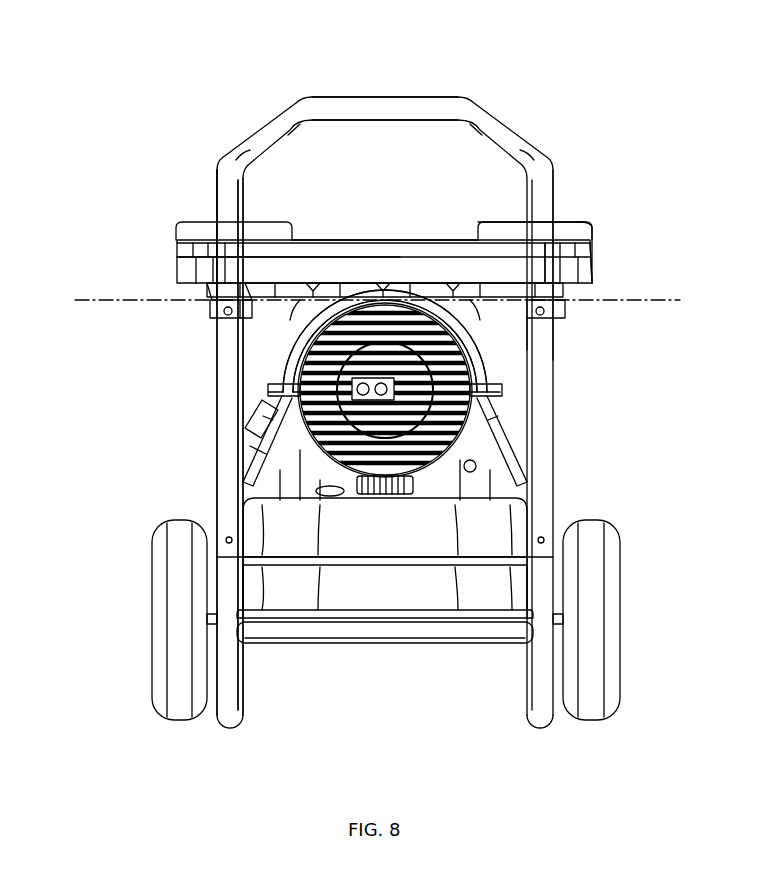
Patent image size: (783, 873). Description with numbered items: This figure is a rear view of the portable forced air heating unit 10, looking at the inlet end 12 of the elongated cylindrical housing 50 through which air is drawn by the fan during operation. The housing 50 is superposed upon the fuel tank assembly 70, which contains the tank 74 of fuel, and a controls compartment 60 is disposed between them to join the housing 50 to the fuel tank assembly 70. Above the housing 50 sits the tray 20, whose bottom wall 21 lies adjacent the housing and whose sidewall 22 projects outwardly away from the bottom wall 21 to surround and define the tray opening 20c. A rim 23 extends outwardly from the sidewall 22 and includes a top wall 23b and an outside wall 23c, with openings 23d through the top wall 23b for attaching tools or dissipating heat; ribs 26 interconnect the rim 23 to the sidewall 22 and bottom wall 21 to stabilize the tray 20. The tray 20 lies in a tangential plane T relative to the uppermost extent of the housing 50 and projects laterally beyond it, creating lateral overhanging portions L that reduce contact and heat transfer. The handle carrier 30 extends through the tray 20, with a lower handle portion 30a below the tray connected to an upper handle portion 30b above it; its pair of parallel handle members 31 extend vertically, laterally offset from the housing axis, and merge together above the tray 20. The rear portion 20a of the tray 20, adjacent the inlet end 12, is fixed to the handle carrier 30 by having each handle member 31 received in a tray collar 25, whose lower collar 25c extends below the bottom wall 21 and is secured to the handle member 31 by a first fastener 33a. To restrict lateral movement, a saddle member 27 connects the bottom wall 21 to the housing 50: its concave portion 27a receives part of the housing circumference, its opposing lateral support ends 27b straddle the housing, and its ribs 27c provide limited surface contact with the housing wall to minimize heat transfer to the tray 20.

The portable forced air heating unit 10 is at (688, 135).
The inlet end 12 is at (303, 378).
The tray 20 is at (648, 243).
The rear portion of the tray 20a is at (272, 264).
The tray opening 20c is at (398, 216).
The bottom wall 21 is at (238, 314).
The sidewall 22 is at (566, 285).
The rim 23 is at (596, 276).
The top wall 23b is at (470, 238).
The outside wall 23c is at (584, 250).
The openings 23d is at (400, 282).
The tray collar 25 is at (548, 346).
The lower collar 25c is at (562, 312).
The ribs 26 is at (222, 302).
The saddle member 27 is at (282, 322).
The concave portion 27a is at (468, 336).
The lateral support ends 27b is at (312, 318).
The ribs 27c is at (338, 300).
The handle carrier 30 is at (500, 95).
The lower handle portion 30a is at (522, 648).
The upper handle portion 30b is at (276, 112).
The handle members 31 is at (226, 152).
The first fastener 33a is at (555, 334).
The housing 50 is at (498, 378).
The controls compartment 60 is at (276, 470).
The fuel tank assembly 70 is at (370, 598).
The tank 74 is at (294, 598).
The lateral overhanging portions L is at (233, 168).
The tangential plane T is at (668, 300).